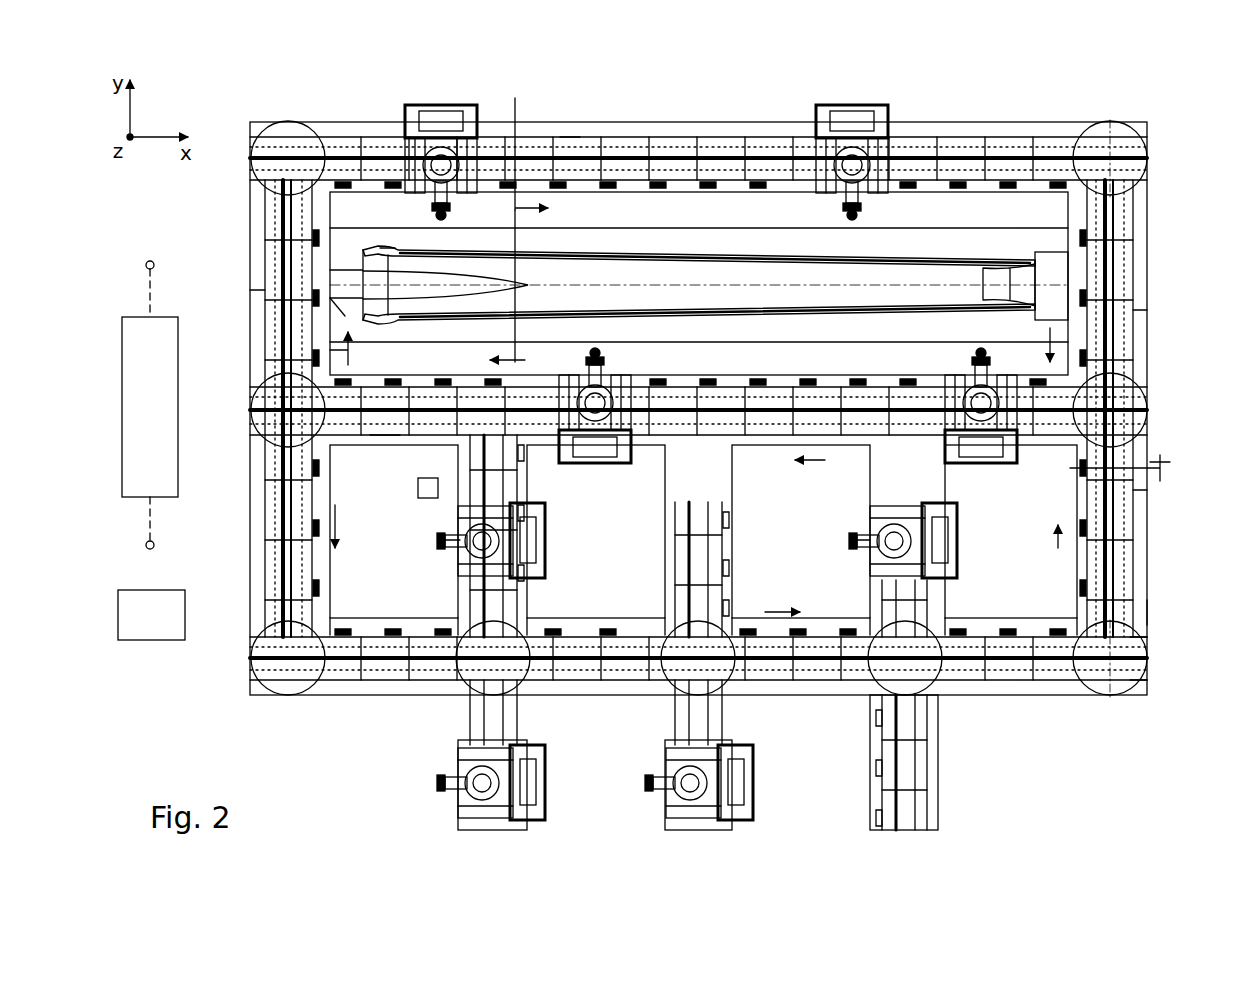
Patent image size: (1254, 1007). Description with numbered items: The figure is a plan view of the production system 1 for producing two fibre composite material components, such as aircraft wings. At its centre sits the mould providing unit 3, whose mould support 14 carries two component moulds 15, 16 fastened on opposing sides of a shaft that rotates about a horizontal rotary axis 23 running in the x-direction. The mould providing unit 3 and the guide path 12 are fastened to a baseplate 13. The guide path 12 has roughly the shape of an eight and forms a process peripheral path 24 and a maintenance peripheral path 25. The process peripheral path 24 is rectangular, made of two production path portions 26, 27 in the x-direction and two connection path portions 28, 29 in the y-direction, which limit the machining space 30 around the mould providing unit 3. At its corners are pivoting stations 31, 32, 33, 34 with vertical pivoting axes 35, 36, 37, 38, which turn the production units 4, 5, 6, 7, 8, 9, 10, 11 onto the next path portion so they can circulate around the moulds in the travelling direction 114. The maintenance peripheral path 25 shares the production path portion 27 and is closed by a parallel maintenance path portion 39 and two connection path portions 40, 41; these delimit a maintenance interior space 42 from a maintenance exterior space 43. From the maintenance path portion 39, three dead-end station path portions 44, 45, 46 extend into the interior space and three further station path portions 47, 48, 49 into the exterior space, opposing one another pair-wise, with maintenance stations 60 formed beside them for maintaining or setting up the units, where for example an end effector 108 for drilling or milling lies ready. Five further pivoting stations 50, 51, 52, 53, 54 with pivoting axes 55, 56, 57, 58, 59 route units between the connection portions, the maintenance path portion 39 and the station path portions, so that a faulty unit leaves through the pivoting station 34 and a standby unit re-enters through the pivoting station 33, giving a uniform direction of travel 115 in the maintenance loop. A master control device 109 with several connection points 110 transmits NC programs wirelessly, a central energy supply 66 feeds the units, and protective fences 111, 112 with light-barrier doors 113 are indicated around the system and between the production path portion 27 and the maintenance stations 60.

The production system 1 is at (945, 125).
The mould providing unit 3 is at (1000, 243).
The production unit 4 is at (438, 100).
The production unit 5 is at (622, 472).
The production unit 6 is at (1025, 437).
The production unit 7 is at (810, 112).
The production unit 8 is at (550, 802).
The production unit 9 is at (548, 568).
The production unit 10 is at (758, 802).
The production unit 11 is at (965, 555).
The guide path 12 is at (1152, 612).
The baseplate 13 is at (775, 292).
The mould support 14 is at (1052, 268).
The component mould 15 is at (345, 314).
The component mould 16 is at (383, 245).
The rotary axis 23 is at (1045, 287).
The process peripheral path 24 is at (625, 132).
The maintenance peripheral path 25 is at (1055, 698).
The production path portion 26 is at (568, 132).
The production path portion 27 is at (385, 428).
The connection path portion 28 is at (262, 294).
The connection path portion 29 is at (1138, 312).
The machining space 30 is at (699, 283).
The pivoting station 31 is at (275, 136).
The pivoting station 32 is at (1098, 140).
The pivoting station 33 is at (1128, 397).
The pivoting station 34 is at (272, 398).
The pivoting axis 35 is at (290, 157).
The pivoting axis 36 is at (1112, 157).
The pivoting axis 37 is at (1125, 412).
The pivoting axis 38 is at (262, 430).
The maintenance path portion 39 is at (800, 598).
The connection path portion 40 is at (262, 566).
The connection path portion 41 is at (1136, 530).
The maintenance interior space 42 is at (801, 540).
The maintenance exterior space 43 is at (394, 618).
The station path portion 44 is at (462, 602).
The station path portion 45 is at (722, 565).
The station path portion 46 is at (875, 598).
The station path portion 47 is at (458, 735).
The station path portion 48 is at (665, 735).
The station path portion 49 is at (930, 768).
The pivoting station 50 is at (297, 672).
The pivoting station 51 is at (480, 672).
The pivoting station 52 is at (683, 672).
The pivoting station 53 is at (925, 672).
The pivoting station 54 is at (1132, 672).
The pivoting axis 55 is at (288, 660).
The pivoting axis 56 is at (497, 660).
The pivoting axis 57 is at (708, 660).
The pivoting axis 58 is at (905, 662).
The pivoting axis 59 is at (1118, 656).
The maintenance station 60 is at (711, 639).
The central energy supply 66 is at (150, 640).
The end effector 108 is at (418, 488).
The master control device 109 is at (178, 378).
The connection point 110 is at (155, 263).
The protective fence 111 is at (1162, 470).
The protective fence 112 is at (1025, 465).
The door 113 is at (1138, 488).
The travelling direction 114 is at (1185, 345).
The direction of travel 115 is at (335, 505).